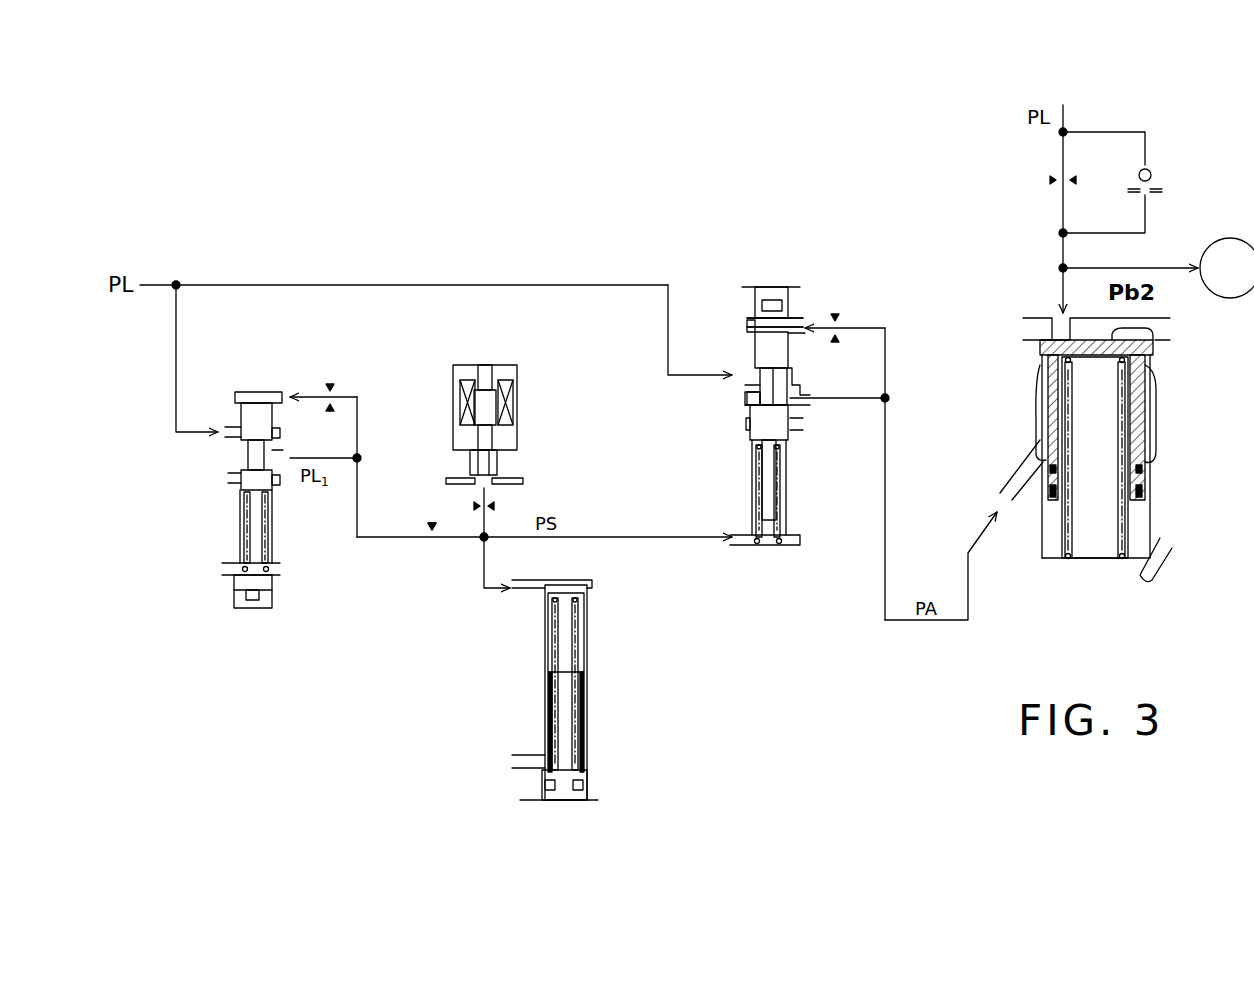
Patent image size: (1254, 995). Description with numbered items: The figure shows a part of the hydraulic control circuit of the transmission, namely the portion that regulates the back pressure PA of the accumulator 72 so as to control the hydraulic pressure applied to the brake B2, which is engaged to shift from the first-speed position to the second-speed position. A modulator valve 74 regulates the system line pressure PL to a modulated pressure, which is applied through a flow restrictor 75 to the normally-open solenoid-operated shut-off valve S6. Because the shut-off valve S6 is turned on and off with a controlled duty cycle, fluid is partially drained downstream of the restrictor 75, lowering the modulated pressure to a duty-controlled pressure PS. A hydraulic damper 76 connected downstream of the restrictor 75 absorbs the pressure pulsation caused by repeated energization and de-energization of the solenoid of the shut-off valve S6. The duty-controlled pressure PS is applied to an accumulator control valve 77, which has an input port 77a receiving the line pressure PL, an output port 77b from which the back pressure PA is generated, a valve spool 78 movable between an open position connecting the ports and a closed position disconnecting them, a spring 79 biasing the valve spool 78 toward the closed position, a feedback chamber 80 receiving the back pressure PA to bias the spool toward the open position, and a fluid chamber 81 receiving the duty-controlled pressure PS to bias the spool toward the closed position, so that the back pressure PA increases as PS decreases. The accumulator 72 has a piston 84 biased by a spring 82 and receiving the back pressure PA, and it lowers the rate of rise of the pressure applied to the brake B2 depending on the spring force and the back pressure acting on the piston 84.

The accumulator 72 is at (1088, 429).
The modulator valve 74 is at (222, 580).
The flow restrictor 75 is at (432, 548).
The hydraulic damper 76 is at (607, 672).
The accumulator control valve 77 is at (775, 387).
The input port 77a is at (740, 378).
The output port 77b is at (805, 398).
The valve spool 78 is at (765, 395).
The spring 79 is at (779, 548).
The feedback chamber 80 is at (748, 328).
The fluid chamber 81 is at (793, 535).
The spring 82 is at (1150, 378).
The piston 84 is at (1050, 428).
The solenoid-operated shut-off valve S6 is at (520, 348).
The brake B2 is at (1158, 268).